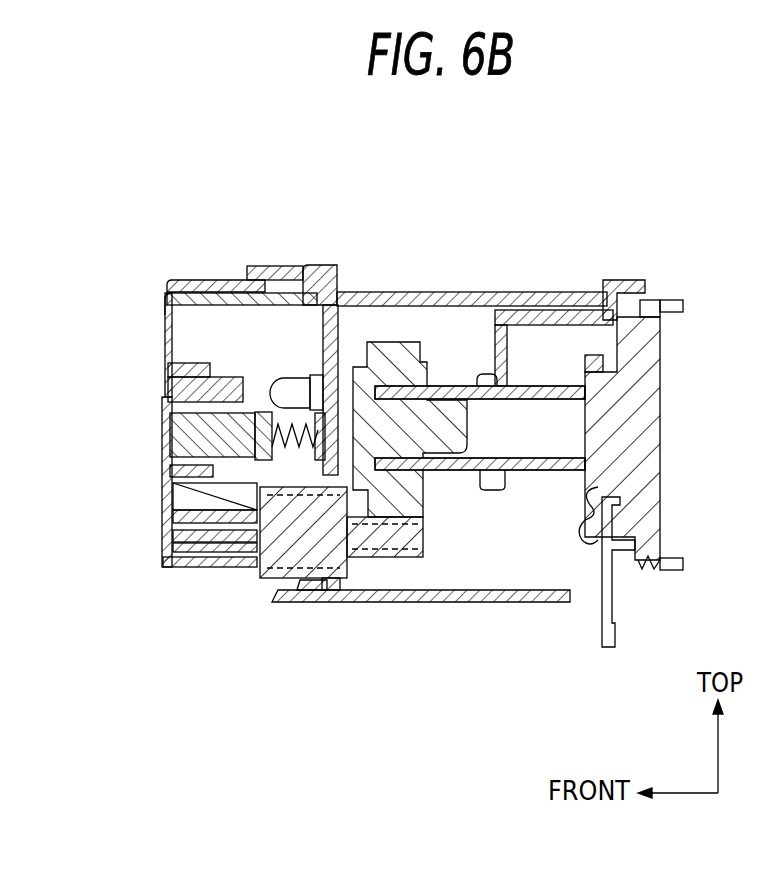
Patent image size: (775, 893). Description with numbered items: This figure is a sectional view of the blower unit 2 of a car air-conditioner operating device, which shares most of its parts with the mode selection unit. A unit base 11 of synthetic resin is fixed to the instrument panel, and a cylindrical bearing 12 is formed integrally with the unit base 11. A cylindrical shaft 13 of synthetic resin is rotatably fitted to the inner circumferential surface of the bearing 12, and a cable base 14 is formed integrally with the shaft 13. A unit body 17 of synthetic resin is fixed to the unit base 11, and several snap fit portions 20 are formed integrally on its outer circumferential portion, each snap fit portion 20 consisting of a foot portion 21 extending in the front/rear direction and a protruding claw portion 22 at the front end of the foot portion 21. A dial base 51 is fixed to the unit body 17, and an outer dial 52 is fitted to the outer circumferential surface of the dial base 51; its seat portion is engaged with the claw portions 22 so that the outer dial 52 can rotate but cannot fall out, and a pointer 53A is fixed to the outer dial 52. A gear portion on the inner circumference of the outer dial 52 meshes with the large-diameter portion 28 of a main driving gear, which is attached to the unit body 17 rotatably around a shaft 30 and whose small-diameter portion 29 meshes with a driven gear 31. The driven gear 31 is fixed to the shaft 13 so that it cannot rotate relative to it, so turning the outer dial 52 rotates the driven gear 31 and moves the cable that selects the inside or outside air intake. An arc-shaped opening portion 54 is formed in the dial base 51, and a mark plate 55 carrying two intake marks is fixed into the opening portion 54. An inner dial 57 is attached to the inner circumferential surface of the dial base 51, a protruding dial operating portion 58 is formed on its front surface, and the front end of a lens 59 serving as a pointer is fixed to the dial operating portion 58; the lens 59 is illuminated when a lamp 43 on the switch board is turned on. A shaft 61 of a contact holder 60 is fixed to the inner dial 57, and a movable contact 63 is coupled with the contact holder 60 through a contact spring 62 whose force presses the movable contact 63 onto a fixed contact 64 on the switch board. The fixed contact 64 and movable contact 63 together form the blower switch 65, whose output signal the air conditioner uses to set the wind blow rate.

The blower unit 2 is at (462, 602).
The unit base 11 is at (546, 298).
The cylindrical bearing 12 is at (483, 490).
The cylindrical shaft 13 is at (556, 470).
The cable base 14 is at (660, 397).
The unit body 17 is at (494, 298).
The snap fit portion 20 is at (360, 682).
The foot portion 21 is at (327, 603).
The claw portion 22 is at (285, 597).
The large-diameter portion 28 is at (263, 575).
The small-diameter portion 29 is at (397, 557).
The shaft 30 is at (230, 567).
The driven gear 31 is at (388, 342).
The lamp 43 is at (292, 377).
The dial base 51 is at (215, 283).
The outer dial 52 is at (187, 280).
The pointer 53A is at (163, 568).
The arc-shaped opening portion 54 is at (168, 312).
The mark plate 55 is at (167, 340).
The inner dial 57 is at (202, 372).
The dial operating portion 58 is at (170, 455).
The lens 59 is at (168, 390).
The contact holder 60 is at (257, 410).
The shaft 61 is at (168, 433).
The contact spring 62 is at (280, 447).
The movable contact 63 is at (313, 283).
The fixed contact 64 is at (345, 470).
The blower switch 65 is at (293, 196).